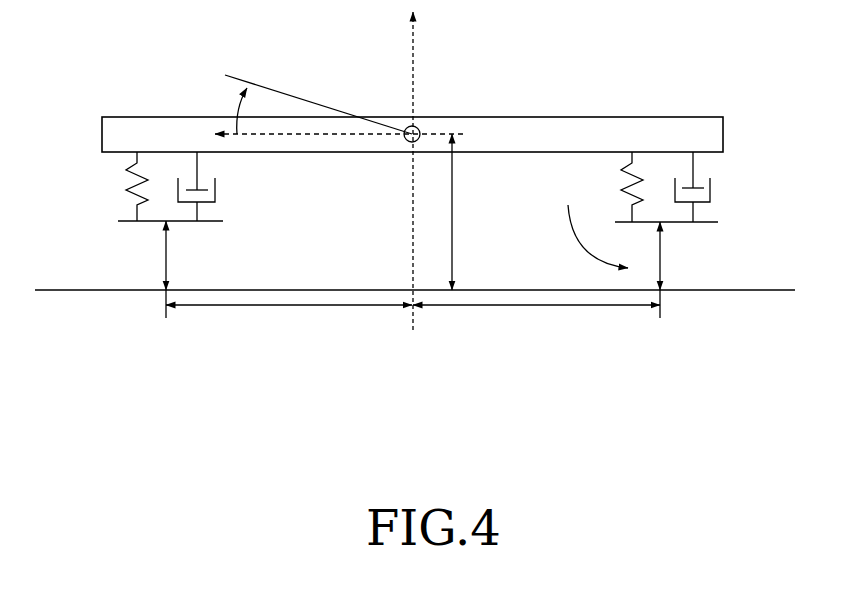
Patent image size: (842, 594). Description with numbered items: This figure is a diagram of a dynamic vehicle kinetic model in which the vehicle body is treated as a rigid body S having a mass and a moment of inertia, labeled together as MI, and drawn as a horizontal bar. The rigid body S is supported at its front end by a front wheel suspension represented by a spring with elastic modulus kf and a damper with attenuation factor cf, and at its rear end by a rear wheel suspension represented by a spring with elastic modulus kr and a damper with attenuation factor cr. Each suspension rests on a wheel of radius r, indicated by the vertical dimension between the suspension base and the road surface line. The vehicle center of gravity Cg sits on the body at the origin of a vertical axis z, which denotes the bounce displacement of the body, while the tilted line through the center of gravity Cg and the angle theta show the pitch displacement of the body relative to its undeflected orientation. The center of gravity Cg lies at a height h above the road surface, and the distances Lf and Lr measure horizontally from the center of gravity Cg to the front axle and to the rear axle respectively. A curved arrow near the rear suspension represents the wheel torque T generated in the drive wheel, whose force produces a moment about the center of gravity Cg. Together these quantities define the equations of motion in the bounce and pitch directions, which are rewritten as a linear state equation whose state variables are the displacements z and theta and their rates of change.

The rigid body S is at (675, 117).
The mass and moment of inertia MI is at (598, 140).
The bounce displacement z is at (402, 169).
The vehicle center of gravity Cg is at (420, 127).
The pitch displacement theta is at (231, 110).
The elastic modulus of front wheel suspension kf is at (159, 186).
The attenuation factor of front wheel suspension cf is at (209, 186).
The elastic modulus of rear wheel suspension kr is at (653, 187).
The attenuation factor of rear wheel suspension cr is at (704, 187).
The height of center of gravity h is at (463, 212).
The radius of the wheel r is at (422, 269).
The distance to front axle Lf is at (289, 321).
The distance to rear axle Lr is at (536, 321).
The wheel torque T is at (591, 241).